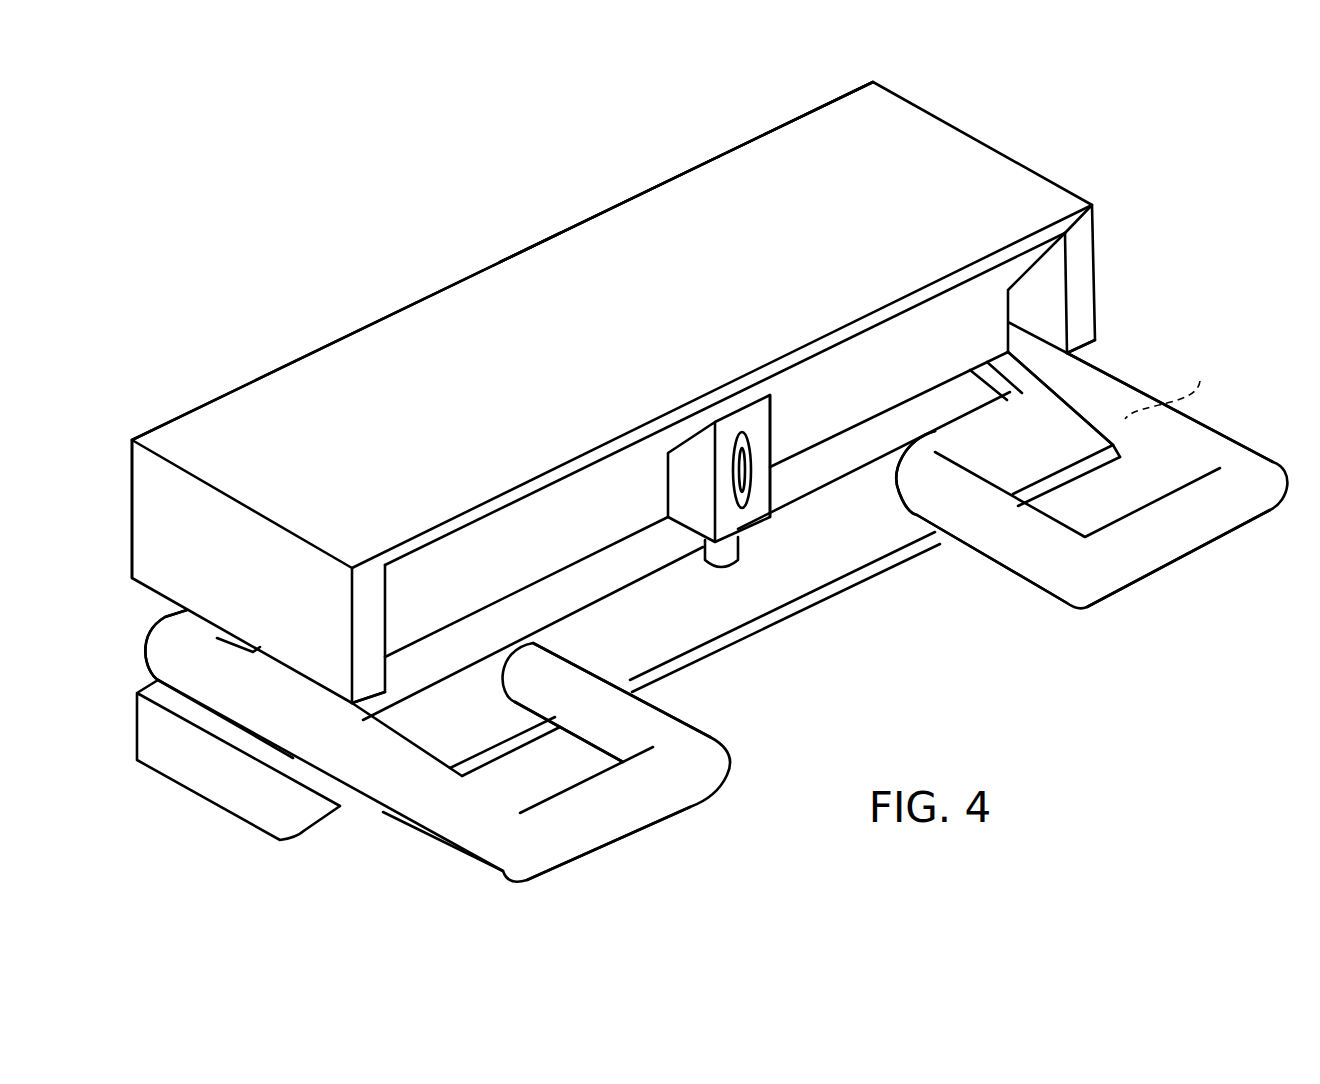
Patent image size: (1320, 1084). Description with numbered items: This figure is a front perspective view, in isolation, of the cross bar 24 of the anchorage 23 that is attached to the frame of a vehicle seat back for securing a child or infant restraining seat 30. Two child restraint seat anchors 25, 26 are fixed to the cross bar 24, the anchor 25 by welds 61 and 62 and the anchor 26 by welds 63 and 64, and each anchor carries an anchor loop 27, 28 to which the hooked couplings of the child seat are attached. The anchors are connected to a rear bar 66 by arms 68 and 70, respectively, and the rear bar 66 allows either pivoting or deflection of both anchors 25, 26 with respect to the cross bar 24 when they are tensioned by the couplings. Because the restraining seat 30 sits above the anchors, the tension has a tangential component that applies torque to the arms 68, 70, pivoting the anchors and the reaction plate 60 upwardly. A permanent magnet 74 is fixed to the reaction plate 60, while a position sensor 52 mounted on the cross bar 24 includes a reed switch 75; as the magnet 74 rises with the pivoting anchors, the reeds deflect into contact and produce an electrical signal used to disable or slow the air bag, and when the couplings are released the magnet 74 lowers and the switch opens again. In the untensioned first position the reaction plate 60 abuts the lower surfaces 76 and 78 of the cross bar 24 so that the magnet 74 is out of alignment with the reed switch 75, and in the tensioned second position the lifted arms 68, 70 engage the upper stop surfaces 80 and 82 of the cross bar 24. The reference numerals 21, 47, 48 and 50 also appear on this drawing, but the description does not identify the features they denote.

The spring clip 21 is at (1130, 620).
The anchorage 23 is at (660, 176).
The cross bar 24 is at (567, 250).
The child restraint seat anchor 25 is at (407, 803).
The child restraint seat anchor 26 is at (995, 550).
The anchor loop 27 is at (593, 845).
The anchor loop 28 is at (1190, 547).
The child or infant restraining seat 30 is at (772, 490).
The front wall 47 is at (160, 428).
The top edge 48 is at (765, 148).
The housing 50 is at (152, 521).
The position sensor 52 is at (758, 437).
The reaction plate 60 is at (722, 623).
The weld 61 is at (410, 748).
The weld 62 is at (508, 702).
The weld 63 is at (908, 515).
The weld 64 is at (1057, 420).
The rear bar 66 is at (167, 635).
The arm 68 is at (225, 700).
The arm 70 is at (1143, 398).
The permanent magnet 74 is at (730, 550).
The reed switch 75 is at (740, 432).
The lower surface 76 is at (245, 748).
The lower surface 78 is at (1170, 383).
The upper stop surface 80 is at (365, 705).
The upper stop surface 82 is at (1098, 344).